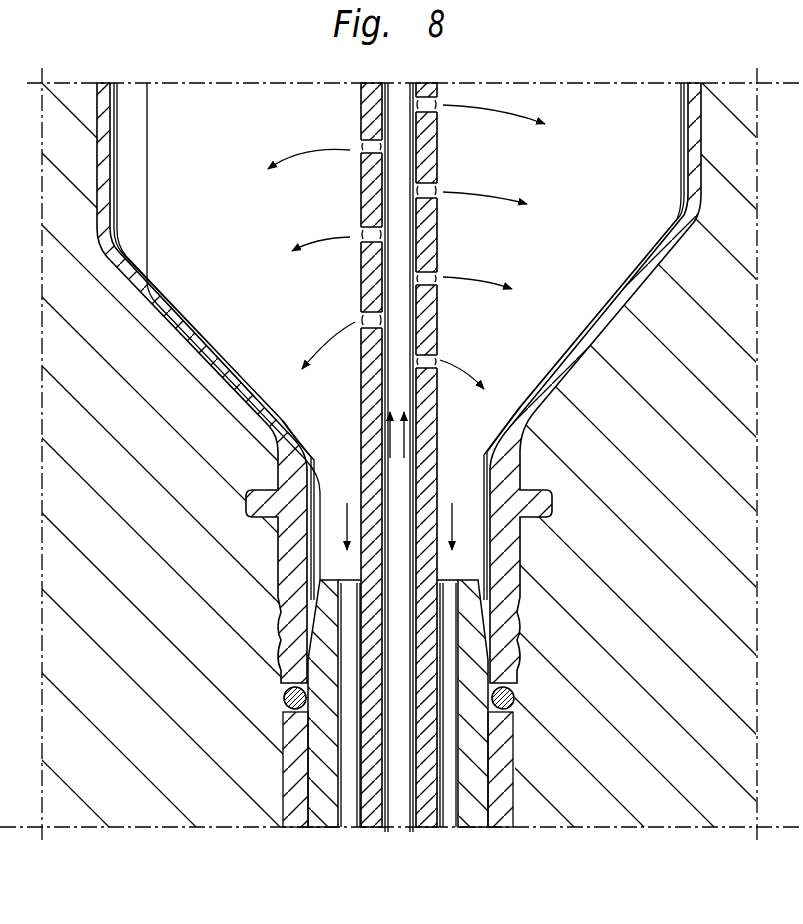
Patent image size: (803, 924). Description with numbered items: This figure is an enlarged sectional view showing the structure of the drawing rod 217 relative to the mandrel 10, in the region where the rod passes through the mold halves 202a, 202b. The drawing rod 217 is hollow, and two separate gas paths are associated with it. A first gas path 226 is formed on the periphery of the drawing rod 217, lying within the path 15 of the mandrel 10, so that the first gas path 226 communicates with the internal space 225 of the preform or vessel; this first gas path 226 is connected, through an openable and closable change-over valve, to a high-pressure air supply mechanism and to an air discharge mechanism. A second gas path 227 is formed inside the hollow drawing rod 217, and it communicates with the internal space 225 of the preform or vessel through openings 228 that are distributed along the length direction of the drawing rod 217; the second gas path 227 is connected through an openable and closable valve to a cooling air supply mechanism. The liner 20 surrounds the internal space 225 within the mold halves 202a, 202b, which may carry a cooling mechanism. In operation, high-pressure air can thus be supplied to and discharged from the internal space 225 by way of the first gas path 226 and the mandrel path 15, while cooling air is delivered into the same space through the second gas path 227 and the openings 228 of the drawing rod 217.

The mandrel 10 is at (320, 812).
The path of the mandrel 15 is at (350, 812).
The liner 20 is at (527, 441).
The mold half 202a is at (177, 594).
The mold half 202b is at (690, 593).
The drawing rod 217 is at (360, 366).
The internal space 225 is at (545, 247).
The first gas path 226 is at (445, 807).
The second gas path 227 is at (405, 807).
The opening 228 is at (440, 358).